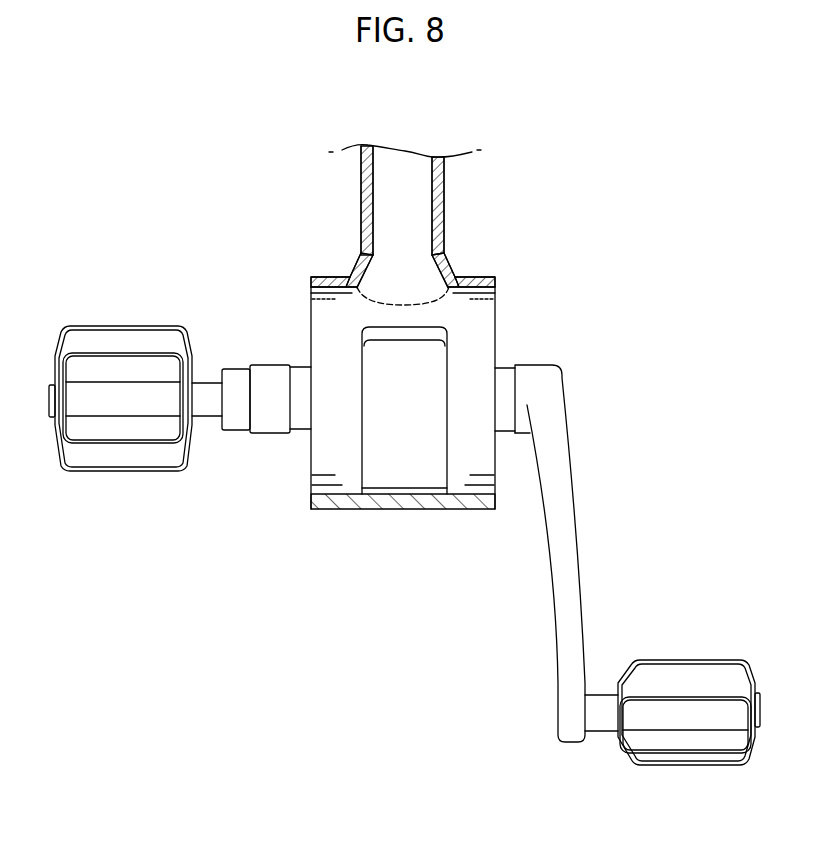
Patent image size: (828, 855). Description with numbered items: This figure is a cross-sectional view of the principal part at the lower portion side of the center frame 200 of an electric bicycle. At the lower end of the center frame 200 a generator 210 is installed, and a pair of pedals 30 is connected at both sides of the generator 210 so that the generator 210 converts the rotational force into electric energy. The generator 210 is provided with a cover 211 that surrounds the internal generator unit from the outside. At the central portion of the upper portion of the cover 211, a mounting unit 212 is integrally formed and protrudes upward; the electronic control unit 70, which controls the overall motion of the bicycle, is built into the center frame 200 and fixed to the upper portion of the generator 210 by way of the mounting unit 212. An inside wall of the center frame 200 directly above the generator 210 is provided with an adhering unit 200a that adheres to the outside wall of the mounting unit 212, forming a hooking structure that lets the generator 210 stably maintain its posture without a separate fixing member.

The center frame 200 is at (465, 181).
The electronic control unit (ECU) 70 is at (383, 197).
The adhering unit 200a is at (354, 263).
The mounting unit 212 is at (427, 272).
The generator 210 is at (514, 309).
The cover 211 is at (497, 347).
The pedals 30 is at (118, 338).